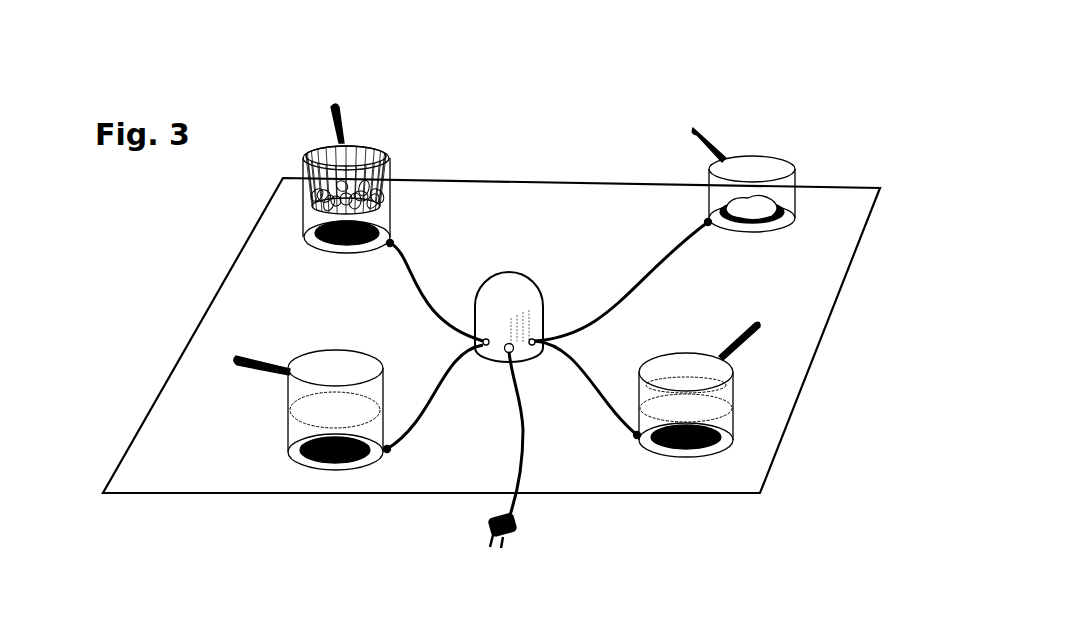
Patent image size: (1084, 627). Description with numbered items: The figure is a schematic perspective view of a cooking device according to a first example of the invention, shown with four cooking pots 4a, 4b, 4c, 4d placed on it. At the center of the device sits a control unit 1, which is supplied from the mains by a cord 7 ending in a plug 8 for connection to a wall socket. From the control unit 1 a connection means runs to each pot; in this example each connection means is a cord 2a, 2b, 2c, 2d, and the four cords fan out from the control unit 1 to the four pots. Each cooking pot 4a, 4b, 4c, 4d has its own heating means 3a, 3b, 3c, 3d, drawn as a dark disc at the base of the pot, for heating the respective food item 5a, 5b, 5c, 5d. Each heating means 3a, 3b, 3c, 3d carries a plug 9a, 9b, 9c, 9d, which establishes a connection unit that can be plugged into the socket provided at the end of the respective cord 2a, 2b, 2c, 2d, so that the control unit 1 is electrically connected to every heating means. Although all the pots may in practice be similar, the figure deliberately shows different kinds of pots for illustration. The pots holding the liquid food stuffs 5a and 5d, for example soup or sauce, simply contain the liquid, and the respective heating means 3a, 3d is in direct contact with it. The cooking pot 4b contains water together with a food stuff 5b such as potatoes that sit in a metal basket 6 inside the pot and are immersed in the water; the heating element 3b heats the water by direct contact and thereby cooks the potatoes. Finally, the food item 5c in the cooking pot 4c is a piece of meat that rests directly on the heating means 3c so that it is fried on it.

The control unit 1 is at (528, 360).
The cord 2a is at (411, 443).
The cord 2b is at (405, 250).
The cord 2c is at (653, 262).
The cord 2d is at (585, 365).
The heating means 3a is at (300, 462).
The heating element 3b is at (313, 245).
The heating means 3c is at (780, 222).
The heating means 3d is at (720, 447).
The cooking pot 4a is at (297, 360).
The cooking pot 4b is at (303, 205).
The cooking pot 4c is at (775, 163).
The cooking pot 4d is at (735, 370).
The food item 5a is at (290, 427).
The food stuff 5b is at (303, 180).
The food item 5c is at (760, 205).
The food item 5d is at (730, 413).
The metal basket 6 is at (390, 185).
The cord 7 is at (522, 425).
The plug 8 is at (516, 527).
The plug 9a is at (386, 452).
The plug 9b is at (392, 242).
The plug 9c is at (706, 221).
The plug 9d is at (640, 437).